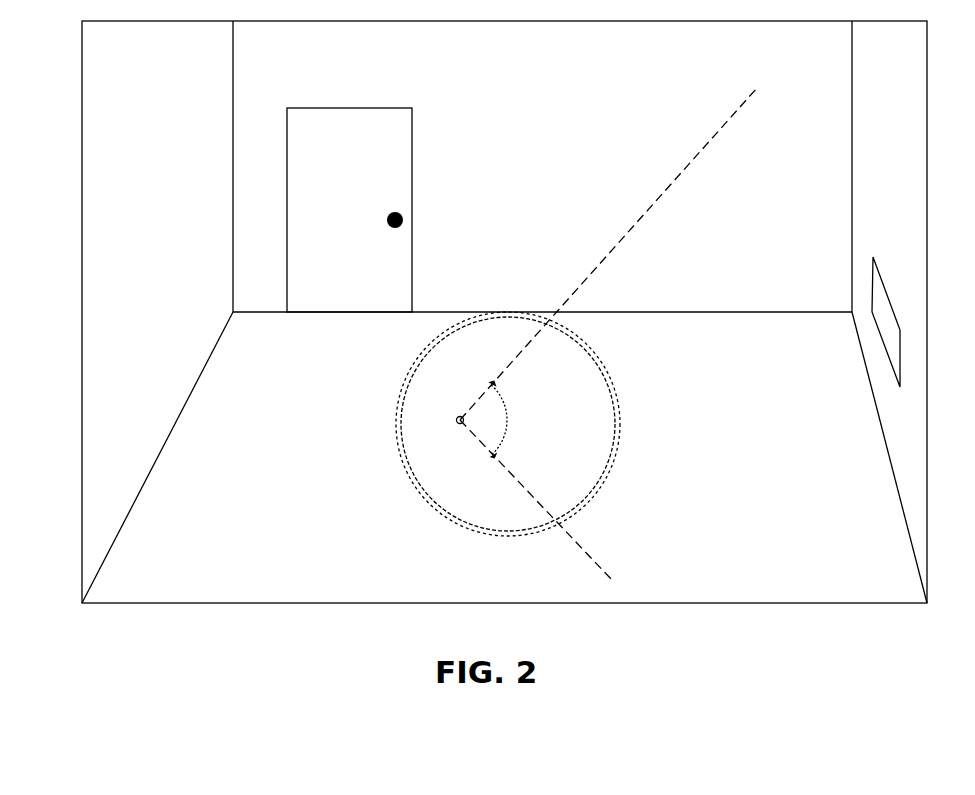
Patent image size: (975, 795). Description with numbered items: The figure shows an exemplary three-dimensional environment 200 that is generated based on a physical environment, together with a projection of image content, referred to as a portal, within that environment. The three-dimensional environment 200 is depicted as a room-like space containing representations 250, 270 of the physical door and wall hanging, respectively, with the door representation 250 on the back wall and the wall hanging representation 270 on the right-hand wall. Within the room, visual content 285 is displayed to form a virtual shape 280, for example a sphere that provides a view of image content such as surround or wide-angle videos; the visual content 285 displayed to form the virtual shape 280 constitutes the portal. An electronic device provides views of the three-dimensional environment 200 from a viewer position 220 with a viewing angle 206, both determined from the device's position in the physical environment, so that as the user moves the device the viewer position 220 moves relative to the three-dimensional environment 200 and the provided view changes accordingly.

The three-dimensional (3D) environment 200 is at (55, 101).
The representation of the door 250 is at (336, 108).
The representation of the wall hanging 270 is at (873, 257).
The viewer position 220 is at (457, 418).
The viewing angle 206 is at (510, 423).
The visual content 285 is at (617, 455).
The virtual shape 280 is at (590, 506).